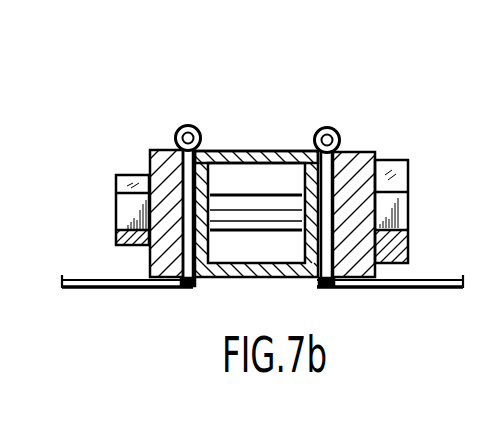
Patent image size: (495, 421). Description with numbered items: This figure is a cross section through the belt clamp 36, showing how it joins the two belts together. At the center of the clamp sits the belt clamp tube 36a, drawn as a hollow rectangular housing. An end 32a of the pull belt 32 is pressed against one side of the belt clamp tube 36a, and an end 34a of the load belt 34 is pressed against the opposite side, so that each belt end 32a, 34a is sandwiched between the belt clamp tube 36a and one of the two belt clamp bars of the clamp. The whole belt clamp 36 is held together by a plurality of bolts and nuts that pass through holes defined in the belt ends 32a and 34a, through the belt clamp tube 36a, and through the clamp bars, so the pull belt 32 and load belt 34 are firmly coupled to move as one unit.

The pull belt 32 is at (88, 281).
The end of the pull belt 32a is at (180, 130).
The load belt 34 is at (423, 281).
The end of the load belt 34a is at (338, 133).
The belt clamp 36 is at (258, 143).
The belt clamp tube 36a is at (271, 149).